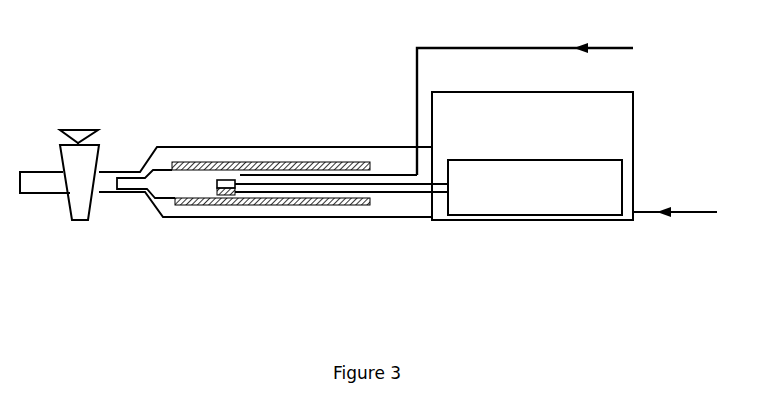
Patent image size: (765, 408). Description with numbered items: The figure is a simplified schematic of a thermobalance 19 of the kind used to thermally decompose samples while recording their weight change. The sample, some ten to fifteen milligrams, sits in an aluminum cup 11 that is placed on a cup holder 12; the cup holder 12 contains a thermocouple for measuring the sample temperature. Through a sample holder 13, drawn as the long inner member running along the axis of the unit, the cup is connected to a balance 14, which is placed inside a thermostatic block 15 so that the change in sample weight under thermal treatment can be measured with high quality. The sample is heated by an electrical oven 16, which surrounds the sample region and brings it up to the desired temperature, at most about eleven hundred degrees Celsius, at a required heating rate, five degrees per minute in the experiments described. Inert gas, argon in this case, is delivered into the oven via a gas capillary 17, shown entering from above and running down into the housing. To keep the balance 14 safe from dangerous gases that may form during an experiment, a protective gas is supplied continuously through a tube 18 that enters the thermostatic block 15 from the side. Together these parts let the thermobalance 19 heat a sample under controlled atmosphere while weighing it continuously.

The aluminum cup 11 is at (177, 203).
The cup holder 12 is at (232, 207).
The sample holder 13 is at (338, 205).
The balance 14 is at (535, 187).
The thermostatic block 15 is at (532, 156).
The electrical oven 16 is at (300, 208).
The gas capillary 17 is at (525, 94).
The tube 18 is at (676, 198).
The thermobalance 19 is at (317, 140).